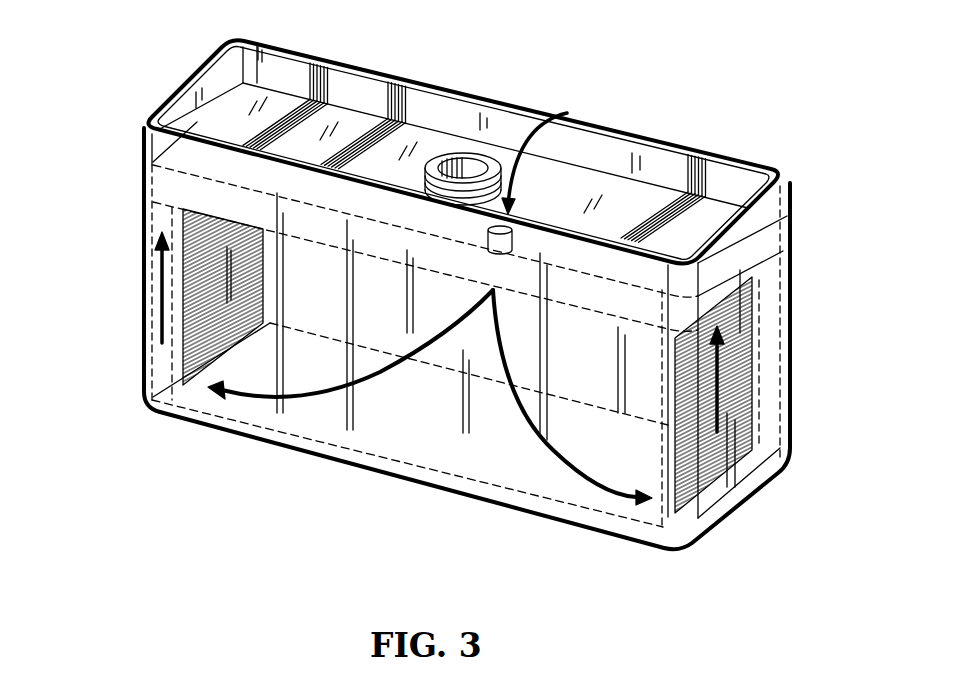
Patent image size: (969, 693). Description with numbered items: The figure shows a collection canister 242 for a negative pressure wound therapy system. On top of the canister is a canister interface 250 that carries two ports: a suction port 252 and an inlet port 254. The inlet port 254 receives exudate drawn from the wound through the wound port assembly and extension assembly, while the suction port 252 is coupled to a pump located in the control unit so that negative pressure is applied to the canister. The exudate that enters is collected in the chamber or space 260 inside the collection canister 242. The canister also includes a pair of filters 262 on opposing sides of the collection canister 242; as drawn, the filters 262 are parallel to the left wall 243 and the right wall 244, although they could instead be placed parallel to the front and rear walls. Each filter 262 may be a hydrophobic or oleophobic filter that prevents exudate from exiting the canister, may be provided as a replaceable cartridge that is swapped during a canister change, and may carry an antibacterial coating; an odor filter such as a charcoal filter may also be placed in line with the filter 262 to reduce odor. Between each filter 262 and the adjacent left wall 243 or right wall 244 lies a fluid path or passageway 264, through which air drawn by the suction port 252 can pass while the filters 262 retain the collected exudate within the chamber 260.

The collection canister 242 is at (645, 74).
The left wall 243 is at (143, 247).
The right wall 244 is at (743, 507).
The canister interface 250 is at (660, 198).
The suction port 252 is at (478, 156).
The inlet port 254 is at (585, 190).
The chamber or space 260 is at (380, 342).
The filters 262 is at (177, 362).
The fluid path or passageway 264 is at (158, 353).